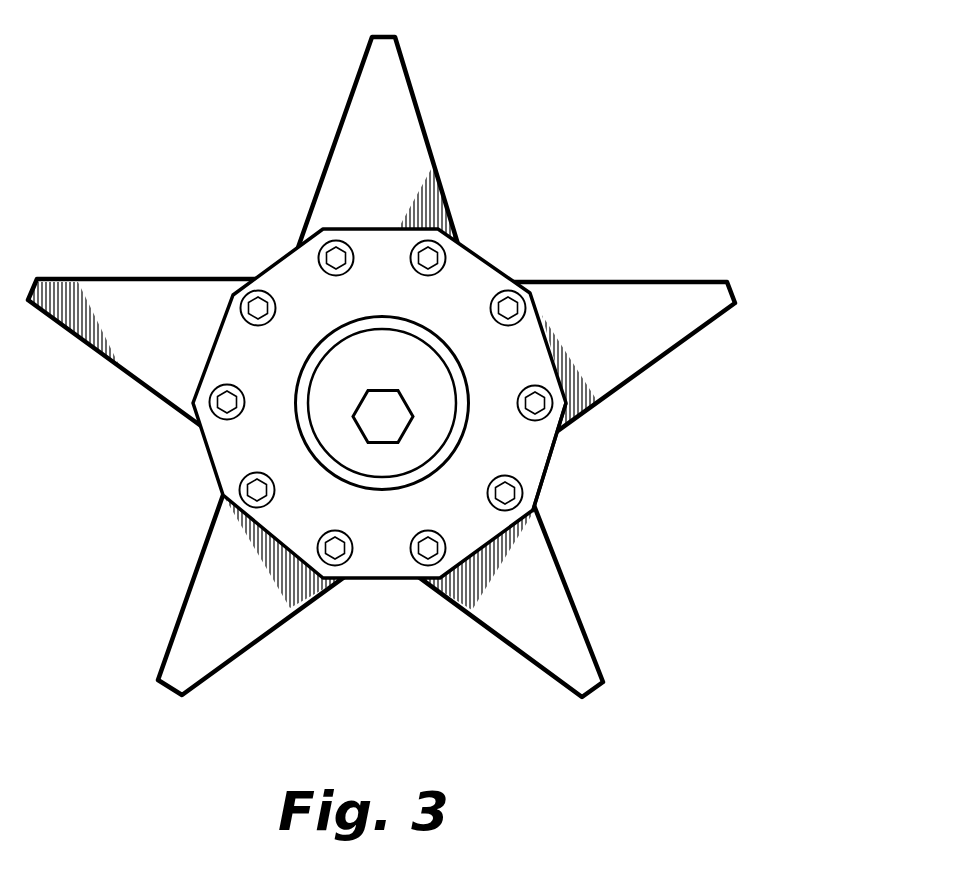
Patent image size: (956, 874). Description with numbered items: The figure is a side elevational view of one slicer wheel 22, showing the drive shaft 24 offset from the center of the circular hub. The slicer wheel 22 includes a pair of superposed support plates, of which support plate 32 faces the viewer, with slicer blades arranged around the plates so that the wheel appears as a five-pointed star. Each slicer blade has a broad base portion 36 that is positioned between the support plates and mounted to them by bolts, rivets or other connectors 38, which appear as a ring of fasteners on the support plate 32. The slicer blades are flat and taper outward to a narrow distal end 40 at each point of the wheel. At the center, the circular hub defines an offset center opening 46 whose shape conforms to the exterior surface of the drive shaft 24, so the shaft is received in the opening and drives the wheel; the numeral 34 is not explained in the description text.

The slicer wheel 22 is at (408, 361).
The drive shaft 24 is at (383, 400).
The support plate 32 is at (465, 284).
The wear plate 34 is at (615, 298).
The broad base portion 36 is at (550, 506).
The connectors 38 is at (333, 260).
The narrow distal end 40 is at (373, 97).
The offset center opening 46 is at (397, 430).